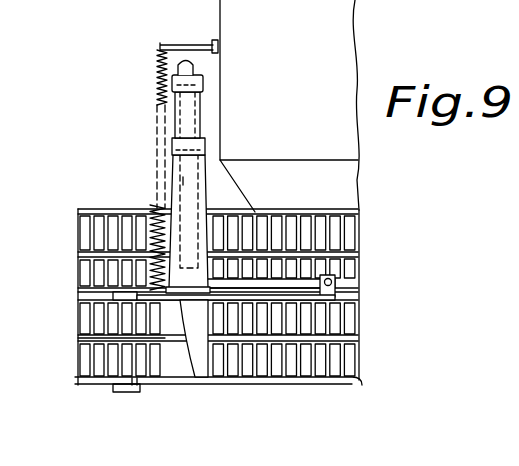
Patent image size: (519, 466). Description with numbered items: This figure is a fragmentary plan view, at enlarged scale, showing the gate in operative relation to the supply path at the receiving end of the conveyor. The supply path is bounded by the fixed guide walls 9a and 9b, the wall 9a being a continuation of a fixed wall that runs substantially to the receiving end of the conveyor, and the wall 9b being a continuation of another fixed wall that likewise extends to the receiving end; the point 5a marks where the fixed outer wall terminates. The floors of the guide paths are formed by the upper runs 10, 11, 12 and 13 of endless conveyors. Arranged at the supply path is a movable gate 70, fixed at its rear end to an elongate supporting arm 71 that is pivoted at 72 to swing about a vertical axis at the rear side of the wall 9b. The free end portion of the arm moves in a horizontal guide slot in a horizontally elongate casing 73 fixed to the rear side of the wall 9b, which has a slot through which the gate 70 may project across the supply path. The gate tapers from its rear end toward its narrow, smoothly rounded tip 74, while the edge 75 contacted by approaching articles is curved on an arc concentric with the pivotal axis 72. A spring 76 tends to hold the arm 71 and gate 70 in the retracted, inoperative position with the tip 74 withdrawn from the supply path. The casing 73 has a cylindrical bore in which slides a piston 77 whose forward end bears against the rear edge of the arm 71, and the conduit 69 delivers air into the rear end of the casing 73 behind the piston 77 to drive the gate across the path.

The terminating point of fixed outer wall 5a is at (294, 212).
The continuation of fixed wall 9 9a is at (347, 384).
The continuation of fixed wall 7 9b is at (360, 291).
The upper run of endless conveyor 10 is at (330, 217).
The upper run of endless conveyor 11 is at (360, 275).
The upper run of endless conveyor 12 is at (348, 313).
The upper run of endless conveyor 13 is at (348, 352).
The conduit 69 is at (193, 68).
The movable gate 70 is at (180, 317).
The supporting arm 71 is at (253, 287).
The pivot 72 is at (333, 273).
The casing 73 is at (207, 157).
The tip of gate 74 is at (220, 377).
The edge of gate 75 is at (160, 337).
The spring 76 is at (158, 86).
The piston 77 is at (192, 181).